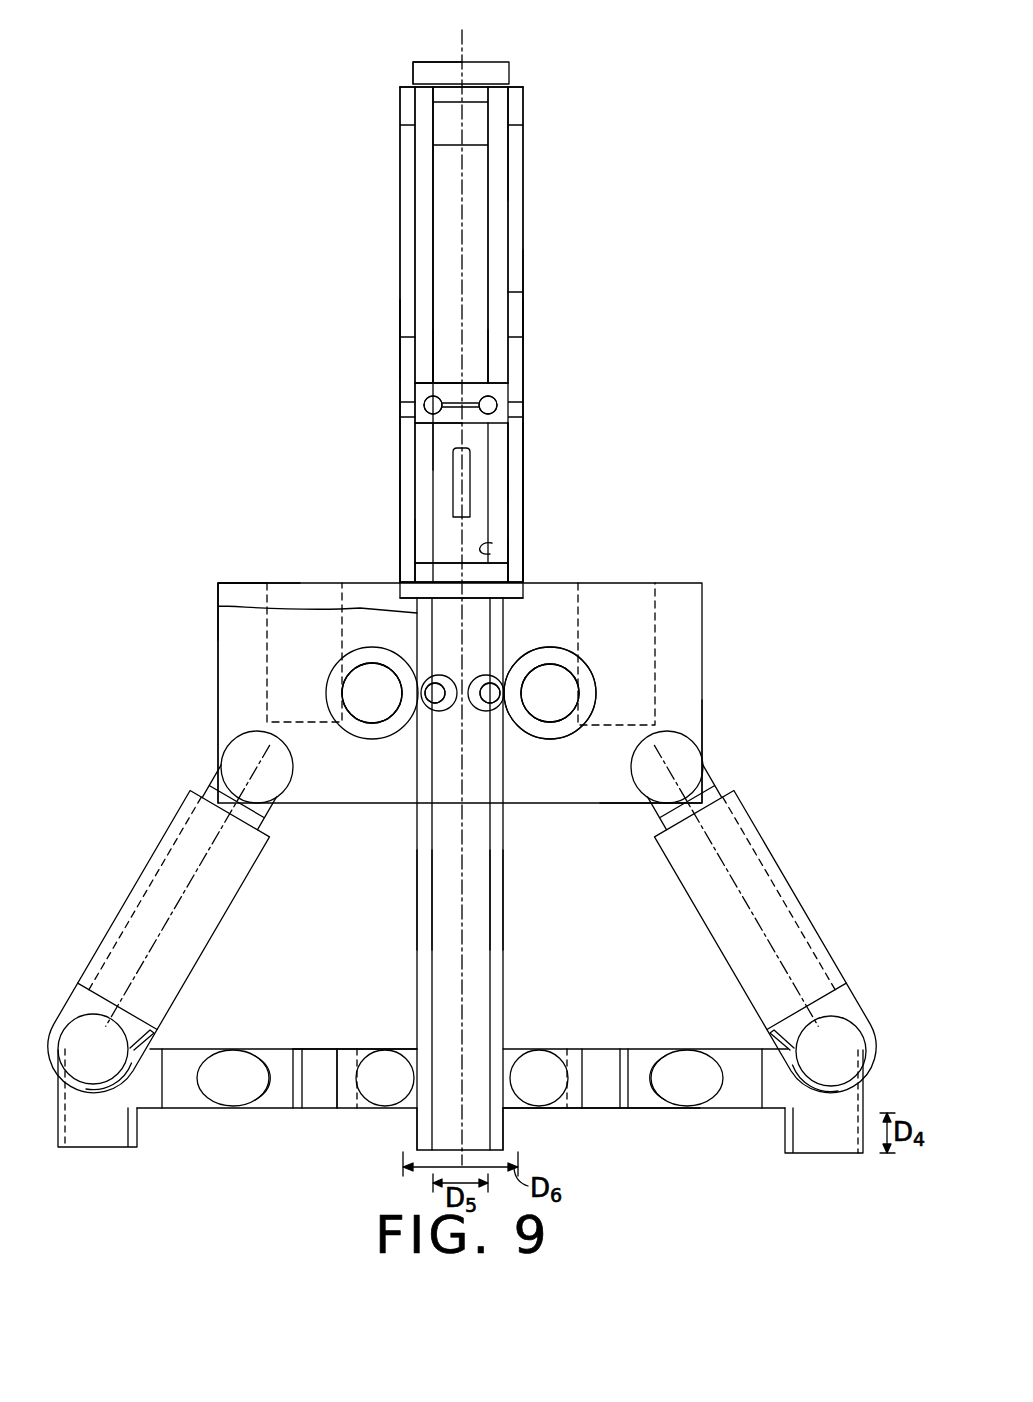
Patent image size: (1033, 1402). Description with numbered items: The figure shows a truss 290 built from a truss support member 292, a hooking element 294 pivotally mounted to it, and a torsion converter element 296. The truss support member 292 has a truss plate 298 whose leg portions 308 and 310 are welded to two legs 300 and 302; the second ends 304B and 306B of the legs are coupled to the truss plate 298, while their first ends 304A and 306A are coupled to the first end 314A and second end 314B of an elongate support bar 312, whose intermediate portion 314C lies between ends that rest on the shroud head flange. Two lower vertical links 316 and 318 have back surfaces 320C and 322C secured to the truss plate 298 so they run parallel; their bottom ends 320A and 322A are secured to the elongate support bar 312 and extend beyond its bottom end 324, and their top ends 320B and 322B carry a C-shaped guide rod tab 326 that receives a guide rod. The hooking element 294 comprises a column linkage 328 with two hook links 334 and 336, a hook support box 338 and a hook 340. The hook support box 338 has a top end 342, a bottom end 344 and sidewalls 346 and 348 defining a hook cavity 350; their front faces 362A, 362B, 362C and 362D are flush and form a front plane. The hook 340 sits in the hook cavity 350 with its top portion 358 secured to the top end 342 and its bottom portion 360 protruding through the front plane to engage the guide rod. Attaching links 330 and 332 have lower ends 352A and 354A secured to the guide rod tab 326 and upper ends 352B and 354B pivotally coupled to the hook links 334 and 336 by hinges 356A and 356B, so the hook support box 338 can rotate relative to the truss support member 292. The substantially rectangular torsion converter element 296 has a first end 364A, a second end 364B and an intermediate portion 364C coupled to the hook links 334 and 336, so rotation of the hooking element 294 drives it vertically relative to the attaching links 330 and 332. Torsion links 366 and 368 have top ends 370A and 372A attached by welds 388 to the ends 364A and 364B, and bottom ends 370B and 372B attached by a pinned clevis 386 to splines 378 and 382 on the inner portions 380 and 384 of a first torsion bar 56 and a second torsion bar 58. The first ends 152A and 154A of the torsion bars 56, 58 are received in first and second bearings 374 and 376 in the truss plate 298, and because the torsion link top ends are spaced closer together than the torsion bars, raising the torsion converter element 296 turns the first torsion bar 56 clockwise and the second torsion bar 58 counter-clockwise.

The first torsion bar 56 is at (570, 698).
The second torsion bar 58 is at (372, 705).
The first end of first torsion bar 152A is at (551, 705).
The first end of second torsion bar 154A is at (368, 698).
The truss 290 is at (610, 246).
The truss support member 292 is at (726, 744).
The hooking element 294 is at (531, 332).
The torsion converter element 296 is at (518, 428).
The truss plate 298 is at (692, 693).
The leg 300 is at (790, 893).
The leg 302 is at (135, 894).
The first end of leg 304A is at (838, 1012).
The second end of leg 304B is at (704, 772).
The first end of leg 306A is at (77, 995).
The second end of leg 306B is at (236, 776).
The leg portion 308 is at (692, 630).
The leg portion 310 is at (237, 597).
The elongate support bar 312 is at (607, 1052).
The first end of elongate support bar 314A is at (852, 1113).
The second end of elongate support bar 314B is at (92, 1123).
The intermediate portion of elongate support bar 314C is at (330, 1048).
The lower vertical link 316 is at (495, 942).
The lower vertical link 318 is at (425, 935).
The bottom end of lower vertical link 320A is at (503, 1133).
The top end of lower vertical link 320B is at (503, 627).
The back surface of lower vertical link 320C is at (504, 892).
The bottom end of lower vertical link 322A is at (417, 1135).
The top end of lower vertical link 322B is at (218, 606).
The back surface of lower vertical link 322C is at (417, 893).
The bottom end of elongate support bar 324 is at (640, 1110).
The guide rod tab 326 is at (517, 592).
The column linkage 328 is at (530, 311).
The attaching link 330 is at (515, 518).
The attaching link 332 is at (400, 513).
The hook link 334 is at (515, 210).
The hook link 336 is at (425, 255).
The hook support box 338 is at (505, 75).
The hook 340 is at (490, 438).
The top end of hook support box 342 is at (484, 60).
The bottom end of hook support box 344 is at (405, 578).
The sidewall of hook support box 346 is at (518, 292).
The sidewall of hook support box 348 is at (405, 338).
The hook cavity 350 is at (507, 547).
The lower end of attaching link 352A is at (510, 573).
The upper end of attaching link 352B is at (520, 440).
The lower end of attaching link 354A is at (402, 568).
The upper end of attaching link 354B is at (408, 420).
The hinge 356A is at (515, 405).
The hinge 356B is at (408, 398).
The top portion of hook 358 is at (450, 160).
The bottom portion of hook 360 is at (453, 465).
The front face of top end 362A is at (430, 68).
The front face of bottom end 362B is at (407, 505).
The front face of sidewall 362C is at (497, 170).
The front face of sidewall 362D is at (418, 270).
The first end of torsion converter element 364A is at (505, 385).
The second end of torsion converter element 364B is at (420, 393).
The intermediate portion of torsion converter element 364C is at (447, 390).
The torsion link 366 is at (510, 500).
The torsion link 368 is at (395, 598).
The top end of torsion link 370A is at (510, 395).
The bottom end of torsion link 370B is at (500, 705).
The top end of torsion link 372A is at (430, 416).
The bottom end of torsion link 372B is at (452, 705).
The first bearing 374 is at (590, 672).
The second bearing 376 is at (345, 686).
The spline 378 is at (478, 705).
The inner portion of first torsion bar 380 is at (588, 690).
The spline 382 is at (437, 709).
The inner portion of second torsion bar 384 is at (334, 665).
The pinned clevis 386 is at (478, 690).
The welds 388 is at (428, 393).